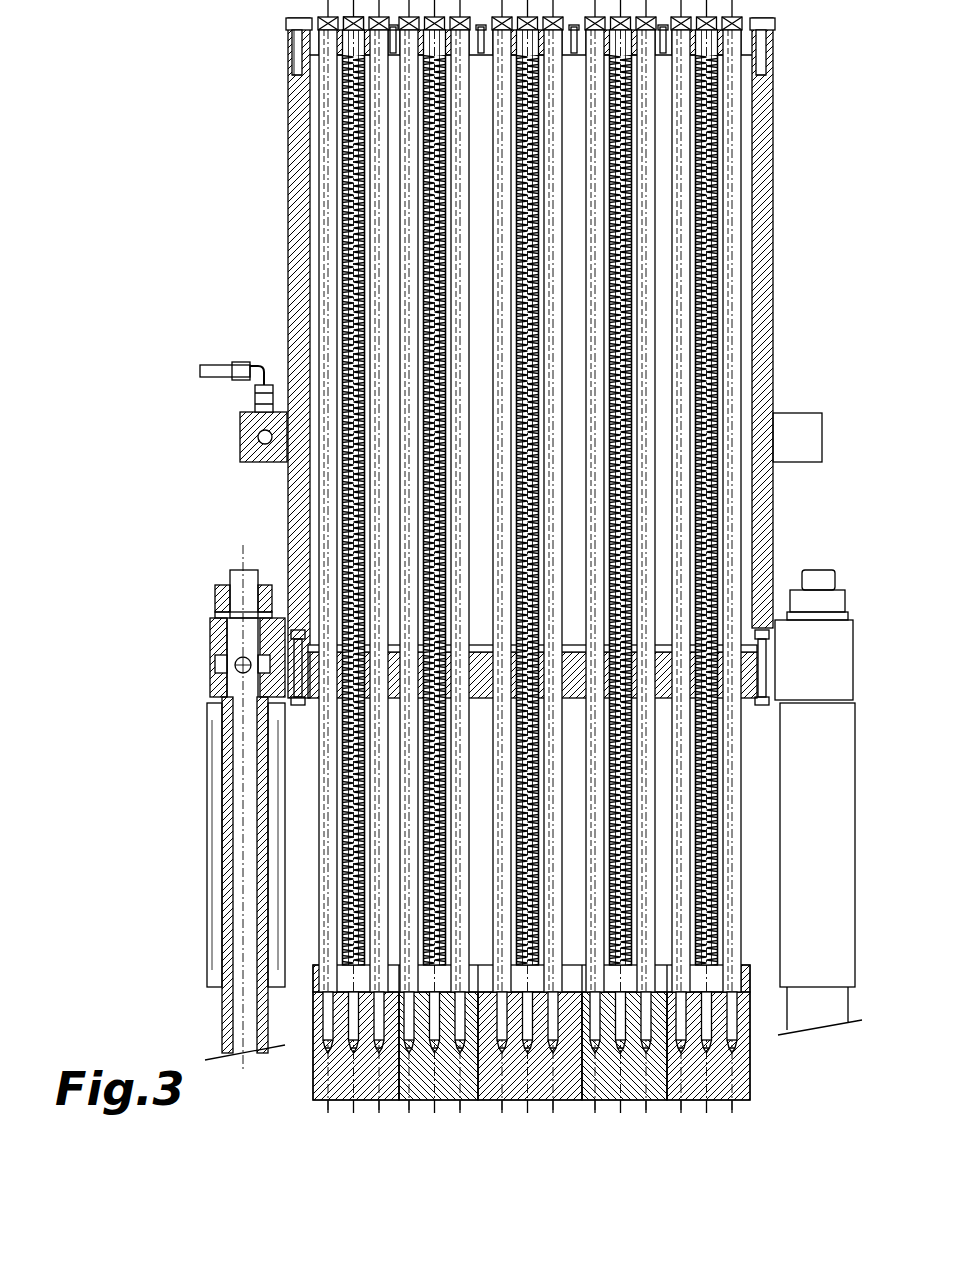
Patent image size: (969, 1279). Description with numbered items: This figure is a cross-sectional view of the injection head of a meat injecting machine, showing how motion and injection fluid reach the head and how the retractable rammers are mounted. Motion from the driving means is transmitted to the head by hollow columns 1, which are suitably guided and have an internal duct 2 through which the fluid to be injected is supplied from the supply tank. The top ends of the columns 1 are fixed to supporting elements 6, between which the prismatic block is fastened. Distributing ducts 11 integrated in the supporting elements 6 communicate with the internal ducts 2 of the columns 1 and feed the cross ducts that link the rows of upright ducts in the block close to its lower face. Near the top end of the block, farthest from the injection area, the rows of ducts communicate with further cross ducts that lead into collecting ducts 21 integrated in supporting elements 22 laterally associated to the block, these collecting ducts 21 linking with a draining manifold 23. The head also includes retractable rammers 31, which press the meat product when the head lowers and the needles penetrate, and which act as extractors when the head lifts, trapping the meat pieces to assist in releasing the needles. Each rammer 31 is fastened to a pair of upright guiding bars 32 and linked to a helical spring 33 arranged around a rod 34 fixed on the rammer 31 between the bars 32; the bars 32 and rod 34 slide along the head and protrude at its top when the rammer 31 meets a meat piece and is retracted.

The hollow column 1 is at (225, 1015).
The internal duct 2 is at (240, 733).
The supporting element 6 is at (215, 625).
The distributing duct 11 is at (240, 665).
The collecting duct 21 is at (258, 437).
The supporting element 22 is at (252, 460).
The draining manifold 23 is at (213, 363).
The retractable rammer 31 is at (456, 1100).
The upright bar 32 is at (312, 160).
The helical spring 33 is at (348, 210).
The rod 34 is at (355, 40).